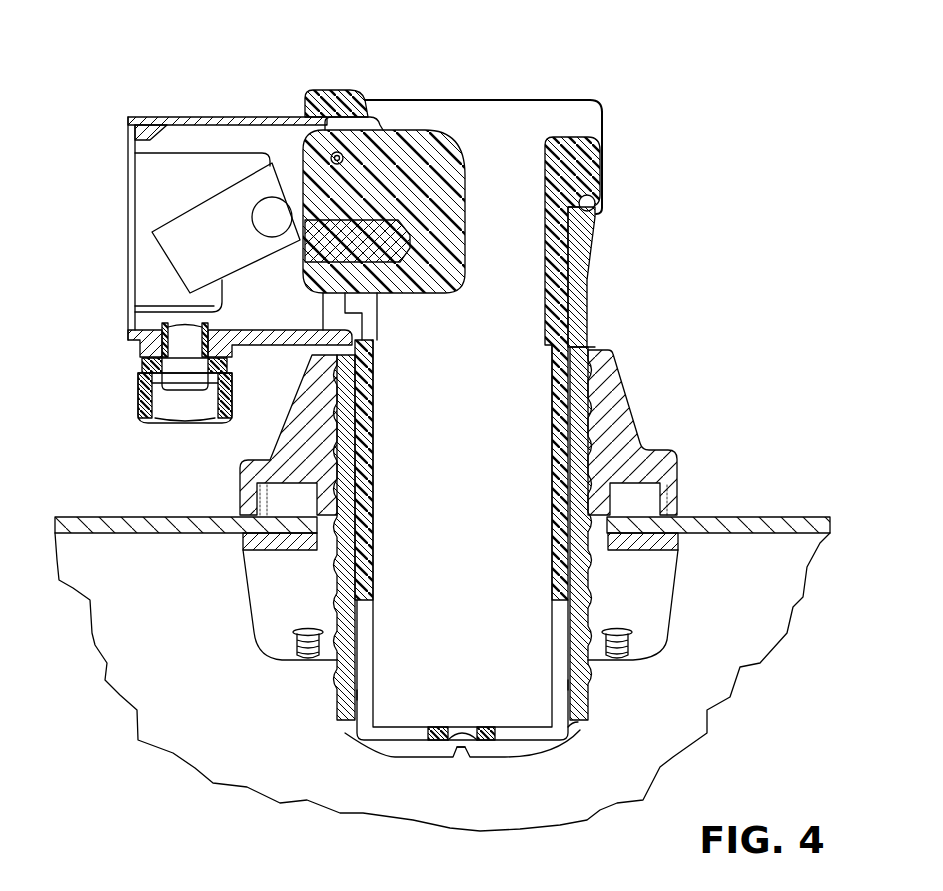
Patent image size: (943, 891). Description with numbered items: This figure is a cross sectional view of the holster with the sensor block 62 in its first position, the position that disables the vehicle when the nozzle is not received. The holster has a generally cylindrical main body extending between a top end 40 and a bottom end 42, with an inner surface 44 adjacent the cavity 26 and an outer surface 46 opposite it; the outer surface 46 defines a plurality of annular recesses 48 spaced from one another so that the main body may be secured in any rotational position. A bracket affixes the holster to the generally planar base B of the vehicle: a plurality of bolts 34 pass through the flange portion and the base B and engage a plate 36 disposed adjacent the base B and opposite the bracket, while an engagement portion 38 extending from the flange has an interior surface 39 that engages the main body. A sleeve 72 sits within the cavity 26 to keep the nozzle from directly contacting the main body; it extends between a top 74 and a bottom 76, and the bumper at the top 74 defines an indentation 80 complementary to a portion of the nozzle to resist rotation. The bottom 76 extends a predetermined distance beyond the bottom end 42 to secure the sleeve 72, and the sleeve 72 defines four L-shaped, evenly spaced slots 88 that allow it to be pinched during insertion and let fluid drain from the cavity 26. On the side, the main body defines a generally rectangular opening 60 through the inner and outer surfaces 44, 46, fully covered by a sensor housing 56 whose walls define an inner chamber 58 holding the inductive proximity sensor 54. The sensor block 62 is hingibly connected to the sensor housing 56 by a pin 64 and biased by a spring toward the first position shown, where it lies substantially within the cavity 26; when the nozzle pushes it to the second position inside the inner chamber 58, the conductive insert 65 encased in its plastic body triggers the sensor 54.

The cavity 26 is at (509, 147).
The bolts 34 is at (308, 658).
The plate 36 is at (678, 567).
The engagement portion 38 is at (613, 383).
The interior surface 39 is at (587, 349).
The top end 40 is at (596, 196).
The bottom end 42 is at (582, 728).
The inner surface 44 is at (357, 643).
The outer surface 46 is at (587, 283).
The recesses 48 is at (593, 402).
The sensor 54 is at (227, 190).
The sensor housing 56 is at (162, 117).
The inner chamber 58 is at (243, 293).
The opening 60 is at (367, 329).
The sensor block 62 is at (403, 128).
The pin 64 is at (340, 156).
The conductive insert 65 is at (386, 292).
The sleeve 72 is at (372, 430).
The top 74 is at (577, 98).
The bottom 76 is at (430, 753).
The indentation 80 is at (594, 119).
The slots 88 is at (563, 683).
The base B is at (762, 517).